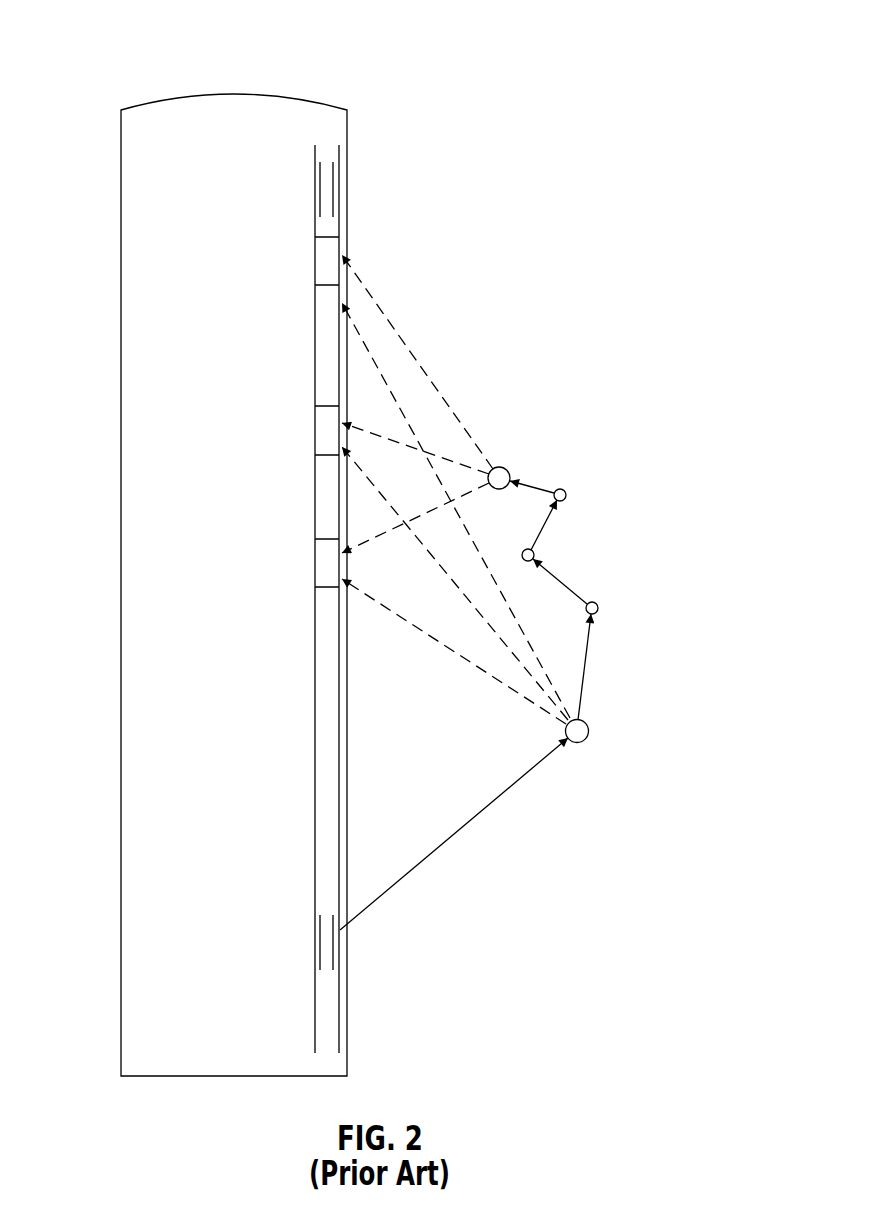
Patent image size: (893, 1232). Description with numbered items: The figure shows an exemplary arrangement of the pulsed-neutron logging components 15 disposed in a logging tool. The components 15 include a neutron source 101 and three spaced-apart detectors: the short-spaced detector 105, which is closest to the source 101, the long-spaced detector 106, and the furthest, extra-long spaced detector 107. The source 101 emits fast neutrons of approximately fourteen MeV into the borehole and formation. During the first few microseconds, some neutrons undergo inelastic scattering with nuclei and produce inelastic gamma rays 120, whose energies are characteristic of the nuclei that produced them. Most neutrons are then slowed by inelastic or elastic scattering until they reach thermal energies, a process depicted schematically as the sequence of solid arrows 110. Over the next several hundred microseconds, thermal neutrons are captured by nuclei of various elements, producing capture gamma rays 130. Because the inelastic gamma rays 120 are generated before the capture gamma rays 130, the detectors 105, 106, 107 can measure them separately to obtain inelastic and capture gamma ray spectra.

The pulsed-neutron logging components 15 is at (580, 46).
The neutron source 101 is at (153, 775).
The short-spaced (SS) detector 105 is at (143, 565).
The long-spaced (LS) detector 106 is at (143, 427).
The extra-long spaced (XLS) detector 107 is at (143, 257).
The sequence of solid arrows 110 is at (548, 521).
The inelastic gamma rays 120 is at (603, 688).
The capture gamma rays 130 is at (408, 347).